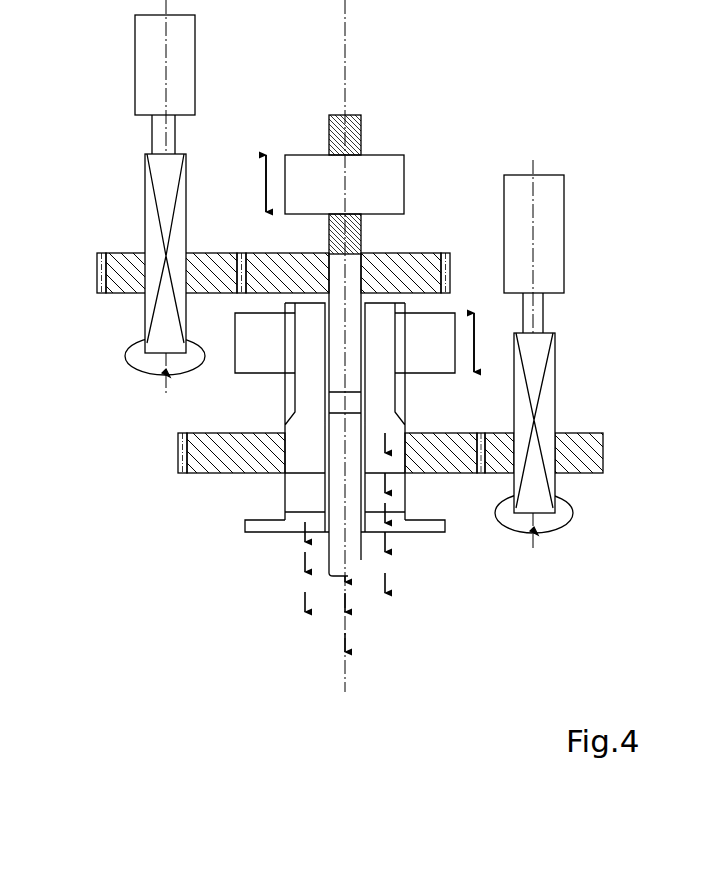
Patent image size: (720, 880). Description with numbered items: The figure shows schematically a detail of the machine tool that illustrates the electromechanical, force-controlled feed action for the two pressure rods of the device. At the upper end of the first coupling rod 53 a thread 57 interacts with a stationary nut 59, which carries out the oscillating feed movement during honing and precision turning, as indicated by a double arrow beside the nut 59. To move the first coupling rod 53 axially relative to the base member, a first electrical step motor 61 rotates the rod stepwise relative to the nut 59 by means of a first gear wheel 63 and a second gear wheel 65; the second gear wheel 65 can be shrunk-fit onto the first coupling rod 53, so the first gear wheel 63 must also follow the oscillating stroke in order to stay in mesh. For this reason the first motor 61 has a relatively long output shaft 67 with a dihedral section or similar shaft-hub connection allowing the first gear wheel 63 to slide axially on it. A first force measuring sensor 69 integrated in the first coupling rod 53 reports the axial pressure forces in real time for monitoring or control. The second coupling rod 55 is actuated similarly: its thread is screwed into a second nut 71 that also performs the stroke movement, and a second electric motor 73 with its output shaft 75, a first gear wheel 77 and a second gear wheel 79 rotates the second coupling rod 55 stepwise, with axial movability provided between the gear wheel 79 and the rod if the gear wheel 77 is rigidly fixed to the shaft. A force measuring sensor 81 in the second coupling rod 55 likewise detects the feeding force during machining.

The first coupling rod 53 is at (352, 564).
The second coupling rod 55 is at (265, 527).
The thread 57 is at (357, 128).
The nut 59 is at (403, 180).
The first electrical step motor 61 is at (183, 68).
The first gear wheel 63 is at (211, 252).
The second gear wheel 65 is at (262, 252).
The output shaft 67 is at (153, 213).
The first force measuring sensor 69 is at (335, 407).
The second nut 71 is at (243, 358).
The second electric motor 73 is at (550, 214).
The output shaft 75 is at (555, 370).
The first gear wheel 77 is at (583, 432).
The second gear wheel 79 is at (450, 430).
The force measuring sensor 81 is at (293, 492).